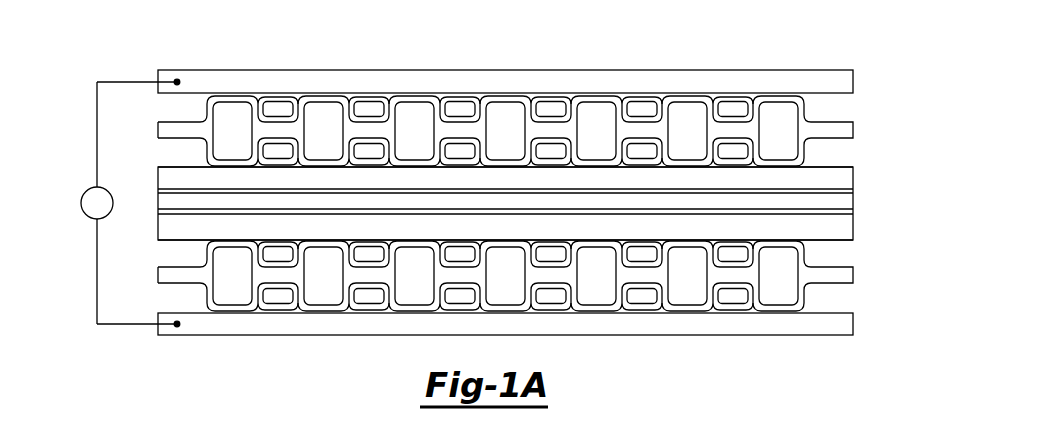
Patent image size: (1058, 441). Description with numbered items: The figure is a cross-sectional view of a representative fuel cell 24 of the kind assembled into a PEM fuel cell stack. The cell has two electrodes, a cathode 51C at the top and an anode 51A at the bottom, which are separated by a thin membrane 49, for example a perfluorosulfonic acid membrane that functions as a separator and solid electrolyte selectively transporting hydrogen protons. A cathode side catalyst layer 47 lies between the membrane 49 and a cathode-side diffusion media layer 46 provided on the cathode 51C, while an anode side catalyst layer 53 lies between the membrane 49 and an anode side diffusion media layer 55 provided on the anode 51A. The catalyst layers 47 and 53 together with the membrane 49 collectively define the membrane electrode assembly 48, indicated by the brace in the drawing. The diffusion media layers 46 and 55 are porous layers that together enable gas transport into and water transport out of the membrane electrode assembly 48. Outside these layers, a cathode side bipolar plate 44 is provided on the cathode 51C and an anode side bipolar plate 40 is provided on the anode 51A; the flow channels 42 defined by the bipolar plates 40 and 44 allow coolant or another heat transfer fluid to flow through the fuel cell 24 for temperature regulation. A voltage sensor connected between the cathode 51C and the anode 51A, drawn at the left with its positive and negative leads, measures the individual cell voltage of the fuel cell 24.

The fuel cell 24 is at (818, 26).
The anode side bipolar plate 40 is at (324, 314).
The flow channels 42 is at (324, 128).
The cathode side bipolar plate 44 is at (597, 100).
The cathode-side diffusion media layer 46 is at (843, 166).
The cathode side catalyst layer 47 is at (853, 191).
The membrane electrode assembly 48 is at (912, 150).
The membrane 49 is at (853, 203).
The anode 51A is at (151, 297).
The cathode 51C is at (150, 108).
The anode side catalyst layer 53 is at (853, 212).
The anode side diffusion media layer 55 is at (843, 242).